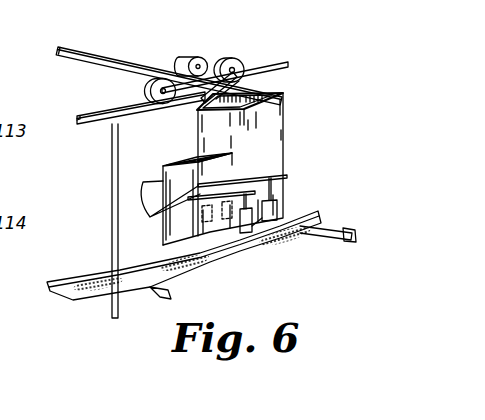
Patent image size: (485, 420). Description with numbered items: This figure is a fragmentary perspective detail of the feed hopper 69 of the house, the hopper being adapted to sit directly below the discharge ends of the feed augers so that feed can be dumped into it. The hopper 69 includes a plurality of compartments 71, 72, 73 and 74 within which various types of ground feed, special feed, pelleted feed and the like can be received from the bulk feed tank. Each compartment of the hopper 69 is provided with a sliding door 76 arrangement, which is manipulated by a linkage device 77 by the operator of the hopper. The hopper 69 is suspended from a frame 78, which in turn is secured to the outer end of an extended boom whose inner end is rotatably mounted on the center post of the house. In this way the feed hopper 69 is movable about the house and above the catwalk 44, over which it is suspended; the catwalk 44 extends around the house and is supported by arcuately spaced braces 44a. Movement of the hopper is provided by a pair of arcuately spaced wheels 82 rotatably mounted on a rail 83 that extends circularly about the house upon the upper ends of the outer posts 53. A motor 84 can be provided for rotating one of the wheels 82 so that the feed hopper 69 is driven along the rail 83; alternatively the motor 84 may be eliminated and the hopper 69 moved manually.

The frame 78 is at (94, 52).
The motor 84 is at (190, 58).
The wheels 82 is at (151, 89).
The linkage device 77 is at (250, 88).
The compartment 71 is at (285, 92).
The rail 83 is at (96, 117).
The compartment 73 is at (194, 156).
The compartment 74 is at (170, 164).
The compartment 72 is at (247, 112).
The feed hopper 69 is at (287, 138).
The sliding door 76 is at (285, 217).
The braces 44a is at (353, 237).
The posts 53 is at (111, 244).
The catwalk 44 is at (70, 300).